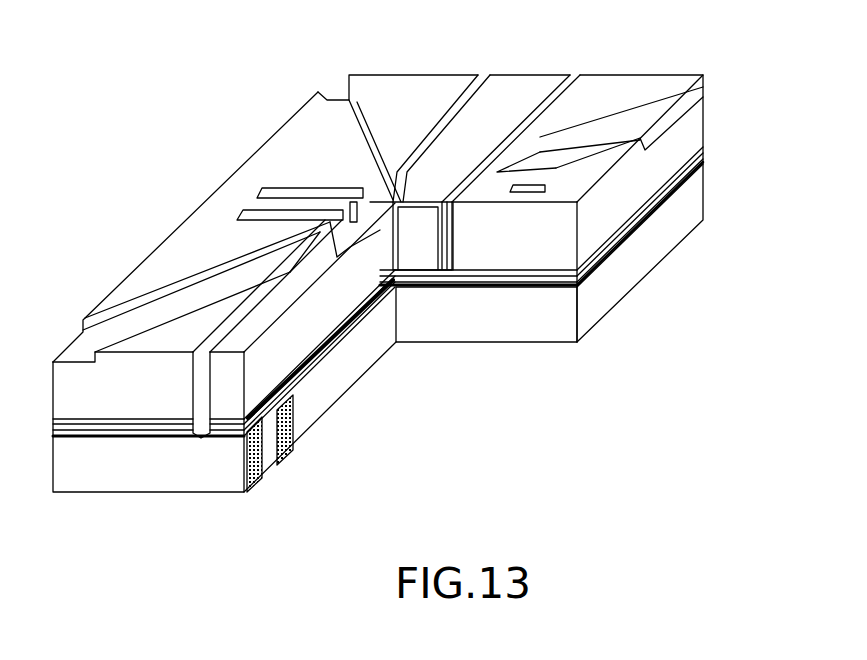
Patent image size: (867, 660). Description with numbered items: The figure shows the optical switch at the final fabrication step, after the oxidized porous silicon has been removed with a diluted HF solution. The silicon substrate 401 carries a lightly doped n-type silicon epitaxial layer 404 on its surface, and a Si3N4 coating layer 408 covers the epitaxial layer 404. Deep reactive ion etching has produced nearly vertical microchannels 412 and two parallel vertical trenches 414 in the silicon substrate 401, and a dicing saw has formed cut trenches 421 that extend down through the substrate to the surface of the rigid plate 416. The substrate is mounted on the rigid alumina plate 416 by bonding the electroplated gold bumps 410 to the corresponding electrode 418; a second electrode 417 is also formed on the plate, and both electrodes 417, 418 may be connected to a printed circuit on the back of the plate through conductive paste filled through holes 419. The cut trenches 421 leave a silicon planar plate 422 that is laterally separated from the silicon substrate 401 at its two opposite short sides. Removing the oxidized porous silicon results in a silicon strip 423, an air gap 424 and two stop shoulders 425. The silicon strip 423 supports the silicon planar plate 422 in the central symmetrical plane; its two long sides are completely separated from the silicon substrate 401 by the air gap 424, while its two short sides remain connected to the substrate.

The silicon substrate 401 is at (86, 393).
The silicon epitaxial layer 404 is at (503, 280).
The coating layer 408 is at (537, 280).
The bumps 410 is at (217, 437).
The microchannels 412 is at (193, 297).
The vertical trenches 414 is at (285, 217).
The Al2O3 plate 416 is at (645, 262).
The electrode 417 is at (387, 290).
The electrode 418 is at (140, 437).
The conductive paste filled through holes 419 is at (292, 388).
The cut trenches 421 is at (533, 120).
The silicon planar plate 422 is at (383, 150).
The silicon strip 423 is at (355, 305).
The air gap 424 is at (338, 325).
The stop shoulders 425 is at (370, 285).